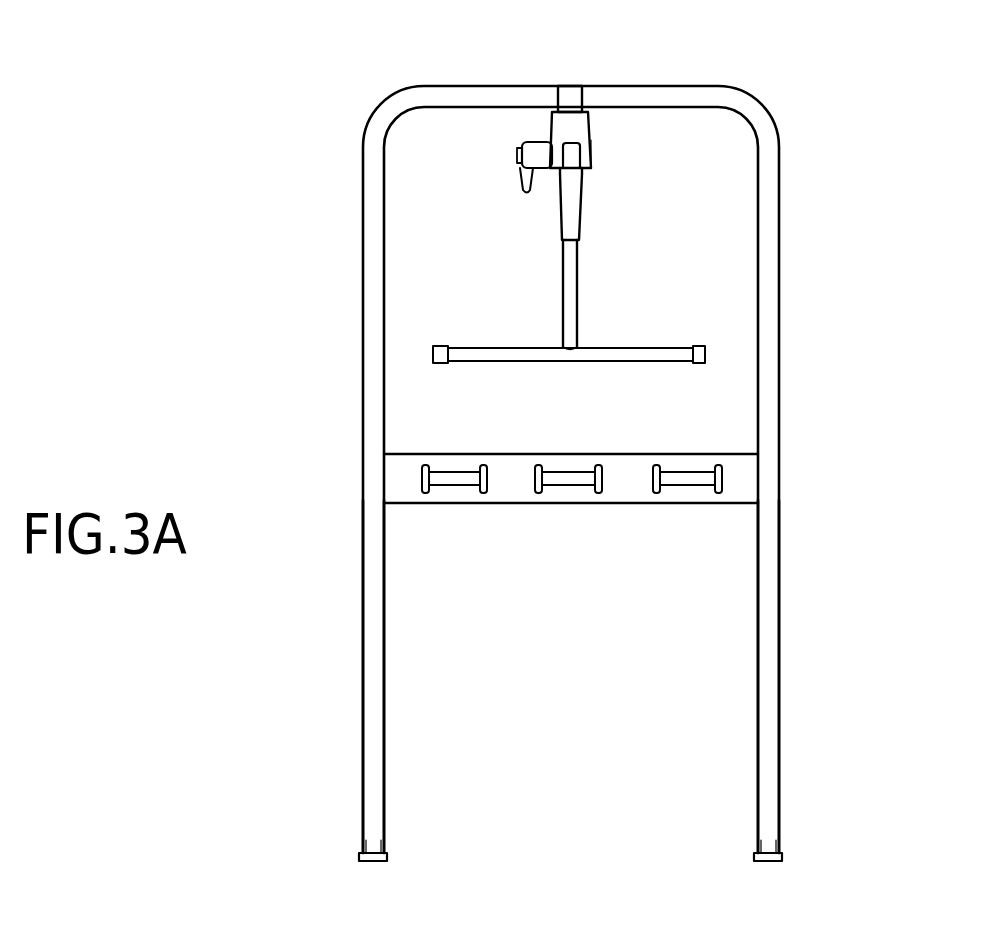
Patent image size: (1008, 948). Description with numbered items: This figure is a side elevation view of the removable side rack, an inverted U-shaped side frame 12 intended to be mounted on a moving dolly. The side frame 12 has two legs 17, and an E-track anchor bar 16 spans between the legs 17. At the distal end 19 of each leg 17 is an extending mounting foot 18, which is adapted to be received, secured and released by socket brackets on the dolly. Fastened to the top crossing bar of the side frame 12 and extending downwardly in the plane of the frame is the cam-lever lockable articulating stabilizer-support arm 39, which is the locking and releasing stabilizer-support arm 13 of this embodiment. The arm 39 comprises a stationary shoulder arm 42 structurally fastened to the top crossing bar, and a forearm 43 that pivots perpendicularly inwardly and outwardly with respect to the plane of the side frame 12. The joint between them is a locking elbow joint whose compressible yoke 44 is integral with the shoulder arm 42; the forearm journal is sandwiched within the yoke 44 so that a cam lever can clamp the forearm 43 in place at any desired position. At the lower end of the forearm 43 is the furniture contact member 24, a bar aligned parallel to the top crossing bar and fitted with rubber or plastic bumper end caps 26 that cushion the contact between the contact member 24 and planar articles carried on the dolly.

The inverted U-shaped side frame 12 is at (781, 190).
The articulating stabilizer-support arm 13 is at (577, 288).
The E-track anchor bar 16 is at (568, 504).
The leg 17 is at (362, 620).
The extending mounting foot 18 is at (358, 857).
The distal end 19 is at (374, 847).
The furniture contact member 24 is at (612, 362).
The bumper end cap 26 is at (438, 343).
The cam-lever lockable articulating stabilizer-support arm 39 is at (610, 150).
The stationary shoulder arm 42 is at (569, 90).
The forearm 43 is at (579, 210).
The compressible yoke 44 is at (553, 130).